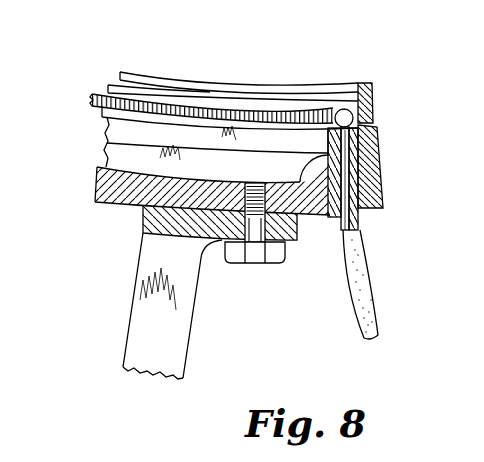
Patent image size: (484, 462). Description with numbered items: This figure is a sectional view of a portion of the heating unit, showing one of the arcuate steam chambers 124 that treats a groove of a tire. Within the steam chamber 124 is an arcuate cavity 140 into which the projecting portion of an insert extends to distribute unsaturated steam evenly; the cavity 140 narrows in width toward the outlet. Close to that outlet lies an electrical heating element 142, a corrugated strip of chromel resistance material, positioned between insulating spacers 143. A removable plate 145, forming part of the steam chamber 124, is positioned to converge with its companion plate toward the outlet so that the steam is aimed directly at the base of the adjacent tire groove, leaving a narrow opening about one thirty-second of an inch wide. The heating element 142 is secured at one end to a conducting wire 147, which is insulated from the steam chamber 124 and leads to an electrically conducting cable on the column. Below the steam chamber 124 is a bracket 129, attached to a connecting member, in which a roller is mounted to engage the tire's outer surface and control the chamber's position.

The steam chamber 124 is at (125, 192).
The bracket 129 is at (150, 252).
The arcuate cavity 140 is at (112, 150).
The electrical heating element 142 is at (259, 110).
The insulating spacer 143 is at (328, 104).
The removable plate 145 is at (185, 85).
The conducting wire 147 is at (356, 165).